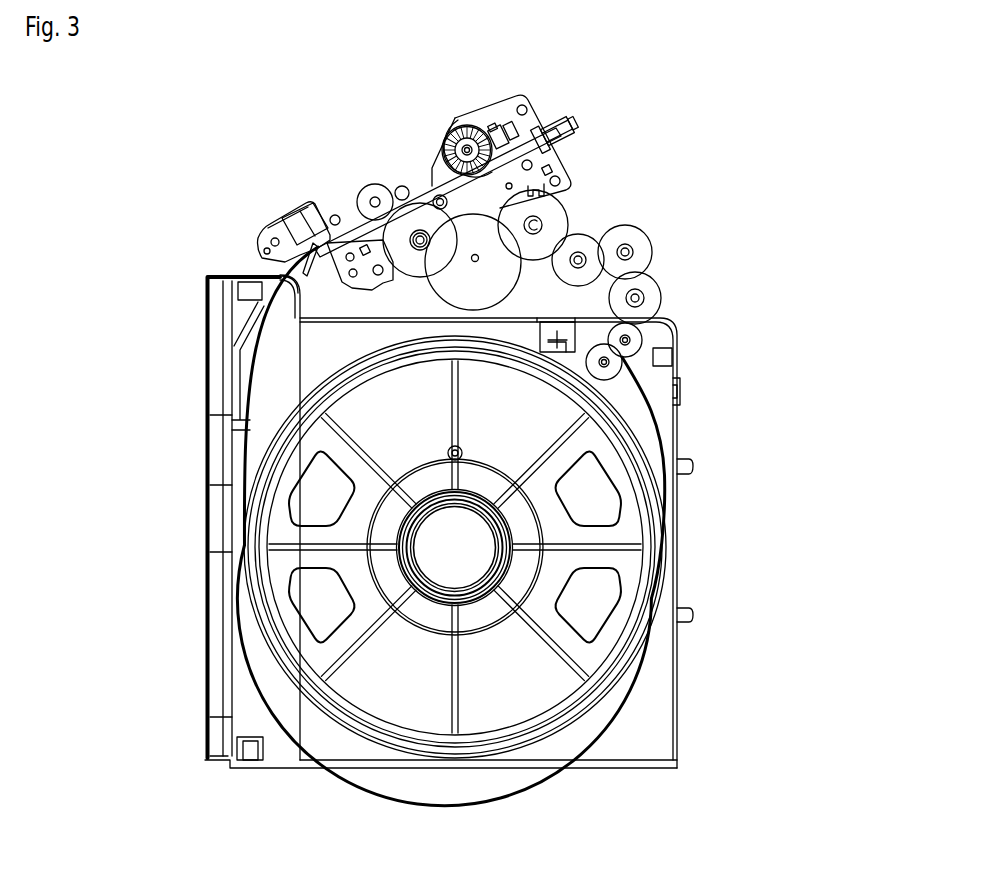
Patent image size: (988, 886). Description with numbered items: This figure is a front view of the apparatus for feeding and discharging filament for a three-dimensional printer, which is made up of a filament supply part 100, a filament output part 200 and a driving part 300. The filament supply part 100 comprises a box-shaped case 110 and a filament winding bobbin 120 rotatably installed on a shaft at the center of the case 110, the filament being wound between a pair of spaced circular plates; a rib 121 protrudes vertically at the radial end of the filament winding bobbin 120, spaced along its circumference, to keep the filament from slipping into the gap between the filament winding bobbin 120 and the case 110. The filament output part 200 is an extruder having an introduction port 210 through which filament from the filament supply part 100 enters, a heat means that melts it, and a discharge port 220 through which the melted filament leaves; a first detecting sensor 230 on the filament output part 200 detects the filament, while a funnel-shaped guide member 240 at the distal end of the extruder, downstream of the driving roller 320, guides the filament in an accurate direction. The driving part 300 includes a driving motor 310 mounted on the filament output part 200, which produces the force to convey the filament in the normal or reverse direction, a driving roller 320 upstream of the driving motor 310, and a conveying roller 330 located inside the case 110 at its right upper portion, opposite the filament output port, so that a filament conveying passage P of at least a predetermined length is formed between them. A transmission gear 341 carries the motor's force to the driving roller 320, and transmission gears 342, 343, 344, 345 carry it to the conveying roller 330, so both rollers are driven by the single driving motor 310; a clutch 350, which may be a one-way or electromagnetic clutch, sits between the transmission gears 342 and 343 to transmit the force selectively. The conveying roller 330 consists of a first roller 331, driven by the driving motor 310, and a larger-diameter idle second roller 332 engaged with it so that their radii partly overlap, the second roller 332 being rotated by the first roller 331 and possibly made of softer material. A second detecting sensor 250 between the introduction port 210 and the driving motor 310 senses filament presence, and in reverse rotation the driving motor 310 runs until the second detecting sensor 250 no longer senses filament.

The filament supply part 100 is at (378, 548).
The case 110 is at (205, 420).
The filament winding bobbin 120 is at (641, 569).
The rib 121 is at (551, 752).
The filament output part 200 is at (408, 170).
The introduction port 210 is at (315, 203).
The discharge port 220 is at (580, 115).
The first detecting sensor 230 is at (466, 122).
The guide member 240 is at (316, 294).
The second detecting sensor 250 is at (270, 222).
The driving part 300 is at (564, 242).
The driving motor 310 is at (420, 257).
The driving roller 320 is at (378, 184).
The conveying roller 330 is at (712, 363).
The first roller 331 is at (642, 338).
The second roller 332 is at (613, 372).
The transmission gear 341 is at (419, 277).
The transmission gear 342 is at (512, 283).
The transmission gear 343 is at (582, 243).
The transmission gear 344 is at (652, 250).
The transmission gear 345 is at (661, 300).
The clutch 350 is at (556, 212).
The filament conveying passage P is at (667, 482).